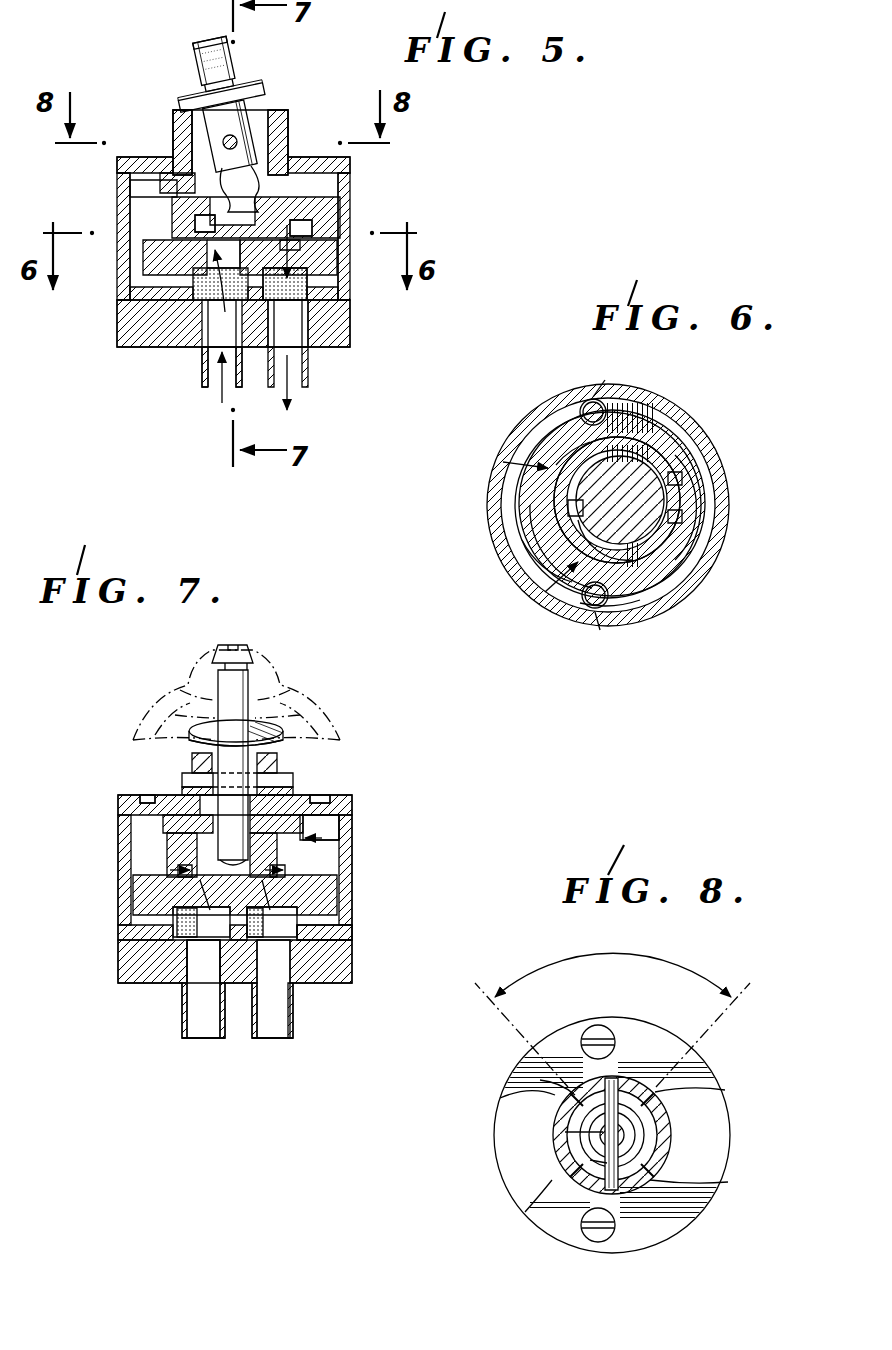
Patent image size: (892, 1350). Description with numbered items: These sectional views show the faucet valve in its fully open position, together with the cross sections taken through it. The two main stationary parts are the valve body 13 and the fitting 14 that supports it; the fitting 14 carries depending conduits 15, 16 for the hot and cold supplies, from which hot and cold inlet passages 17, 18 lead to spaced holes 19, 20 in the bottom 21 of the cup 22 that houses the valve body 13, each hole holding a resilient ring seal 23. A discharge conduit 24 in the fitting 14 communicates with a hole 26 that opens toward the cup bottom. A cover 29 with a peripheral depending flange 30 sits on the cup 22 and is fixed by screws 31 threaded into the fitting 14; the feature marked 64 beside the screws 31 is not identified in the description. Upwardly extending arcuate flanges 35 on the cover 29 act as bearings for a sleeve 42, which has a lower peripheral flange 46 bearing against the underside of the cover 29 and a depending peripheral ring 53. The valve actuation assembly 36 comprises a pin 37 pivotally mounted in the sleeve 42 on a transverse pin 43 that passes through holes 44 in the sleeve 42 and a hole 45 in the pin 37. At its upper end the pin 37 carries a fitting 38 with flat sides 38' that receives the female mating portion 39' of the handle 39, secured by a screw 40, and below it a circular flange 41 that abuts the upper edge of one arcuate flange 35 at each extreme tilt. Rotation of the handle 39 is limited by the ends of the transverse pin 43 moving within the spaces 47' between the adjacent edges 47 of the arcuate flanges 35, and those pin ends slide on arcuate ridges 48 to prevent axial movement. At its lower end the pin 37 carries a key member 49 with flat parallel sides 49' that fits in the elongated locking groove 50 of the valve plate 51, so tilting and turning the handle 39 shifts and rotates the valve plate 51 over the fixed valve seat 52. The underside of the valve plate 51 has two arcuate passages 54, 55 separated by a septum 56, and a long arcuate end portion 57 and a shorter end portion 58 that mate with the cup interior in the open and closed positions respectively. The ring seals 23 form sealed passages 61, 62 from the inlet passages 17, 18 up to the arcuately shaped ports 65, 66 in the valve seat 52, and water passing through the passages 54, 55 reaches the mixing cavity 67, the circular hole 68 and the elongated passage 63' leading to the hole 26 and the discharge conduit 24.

In FIG. 7, the valve body 13 is at (385, 795).
In FIG. 5, the fitting 14 is at (118, 337).
In FIG. 7, the fitting 14 is at (352, 975).
In FIG. 7, the depending conduit 15 is at (182, 1030).
In FIG. 5, the depending conduit 16 is at (202, 382).
In FIG. 7, the depending conduit 16 is at (293, 1030).
In FIG. 7, the hot inlet passage 17 is at (195, 970).
In FIG. 5, the cold inlet passage 18 is at (215, 335).
In FIG. 7, the cold inlet passage 18 is at (280, 975).
In FIG. 7, the port or hole 19 is at (195, 945).
In FIG. 7, the port or hole 20 is at (350, 935).
In FIG. 7, the bottom of cup 21 is at (130, 930).
In FIG. 6, the cup 22 is at (706, 588).
In FIG. 7, the cup 22 is at (120, 812).
In FIG. 5, the resilient ring seals 23 is at (195, 283).
In FIG. 7, the resilient ring seals 23 is at (175, 920).
In FIG. 5, the conduit 24 is at (308, 375).
In FIG. 5, the hole 26 is at (305, 332).
In FIG. 5, the cover 29 is at (352, 164).
In FIG. 8, the cover 29 is at (693, 1060).
In FIG. 5, the peripheral depending flange 30 is at (345, 185).
In FIG. 7, the peripheral depending flange 30 is at (336, 830).
In FIG. 6, the screws 31 is at (585, 405).
In FIG. 7, the screws 31 is at (140, 797).
In FIG. 8, the screws 31 is at (598, 1030).
In FIG. 8, the arcuate flanges 35 is at (667, 1117).
In FIG. 5, the valve actuation assembly 36 is at (248, 65).
In FIG. 5, the pin 37 is at (240, 100).
In FIG. 6, the pin 37 is at (620, 500).
In FIG. 7, the pin 37 is at (230, 750).
In FIG. 8, the pin 37 is at (645, 1138).
In FIG. 5, the fitting 38 is at (188, 53).
In FIG. 7, the fitting 38 is at (236, 724).
In FIG. 5, the flat sides 38' is at (206, 24).
In FIG. 7, the handle 39 is at (250, 684).
In FIG. 7, the female mating portion 39' is at (256, 696).
In FIG. 7, the screw 40 is at (255, 650).
In FIG. 5, the circular flange 41 is at (178, 95).
In FIG. 7, the circular flange 41 is at (280, 740).
In FIG. 5, the sleeve 42 is at (180, 125).
In FIG. 8, the sleeve 42 is at (657, 1160).
In FIG. 5, the transverse pin 43 is at (225, 145).
In FIG. 7, the transverse pin 43 is at (180, 775).
In FIG. 8, the transverse pin 43 is at (607, 1163).
In FIG. 7, the holes 44 is at (282, 770).
In FIG. 8, the holes 44 is at (612, 1090).
In FIG. 5, the hole 45 is at (236, 140).
In FIG. 8, the hole 45 is at (570, 1132).
In FIG. 5, the peripheral flange 46 is at (160, 183).
In FIG. 8, the edges 47 is at (602, 1139).
In FIG. 8, the spaces 47' is at (613, 970).
In FIG. 8, the arcuate ridges 48 is at (580, 1090).
In FIG. 5, the key member 49 is at (297, 142).
In FIG. 7, the key member 49 is at (280, 778).
In FIG. 7, the flat parallel sides 49' is at (220, 830).
In FIG. 5, the locking groove 50 is at (310, 215).
In FIG. 7, the locking groove 50 is at (170, 850).
In FIG. 6, the valve plate 51 is at (572, 602).
In FIG. 7, the valve plate 51 is at (340, 840).
In FIG. 5, the valve seat 52 is at (256, 217).
In FIG. 6, the valve seat 52 is at (520, 478).
In FIG. 7, the valve seat 52 is at (128, 882).
In FIG. 5, the peripheral ring 53 is at (132, 190).
In FIG. 5, the arcuate passage 54 is at (196, 225).
In FIG. 6, the arcuate passage 54 is at (540, 562).
In FIG. 7, the arcuate passage 54 is at (178, 870).
In FIG. 5, the arcuate passage 55 is at (312, 226).
In FIG. 6, the arcuate passage 55 is at (598, 455).
In FIG. 7, the arcuate passage 55 is at (285, 870).
In FIG. 6, the septum 56 is at (568, 505).
In FIG. 6, the long arcuate end portion 57 is at (700, 505).
In FIG. 6, the short arcuate end portion 58 is at (530, 530).
In FIG. 7, the sealed passage 61 is at (200, 968).
In FIG. 5, the sealed passage 62 is at (160, 293).
In FIG. 7, the sealed passage 62 is at (265, 958).
In FIG. 5, the passage 63' is at (336, 319).
In FIG. 6, the screw hole 64 is at (598, 388).
In FIG. 6, the arcuately shaped port 65 is at (578, 520).
In FIG. 7, the arcuately shaped port 65 is at (200, 888).
In FIG. 5, the arcuately shaped port 66 is at (207, 255).
In FIG. 6, the arcuately shaped port 66 is at (545, 468).
In FIG. 7, the arcuately shaped port 66 is at (265, 892).
In FIG. 5, the mixing cavity 67 is at (300, 245).
In FIG. 6, the mixing cavity 67 is at (682, 478).
In FIG. 5, the circular hole 68 is at (307, 283).
In FIG. 6, the circular hole 68 is at (682, 516).